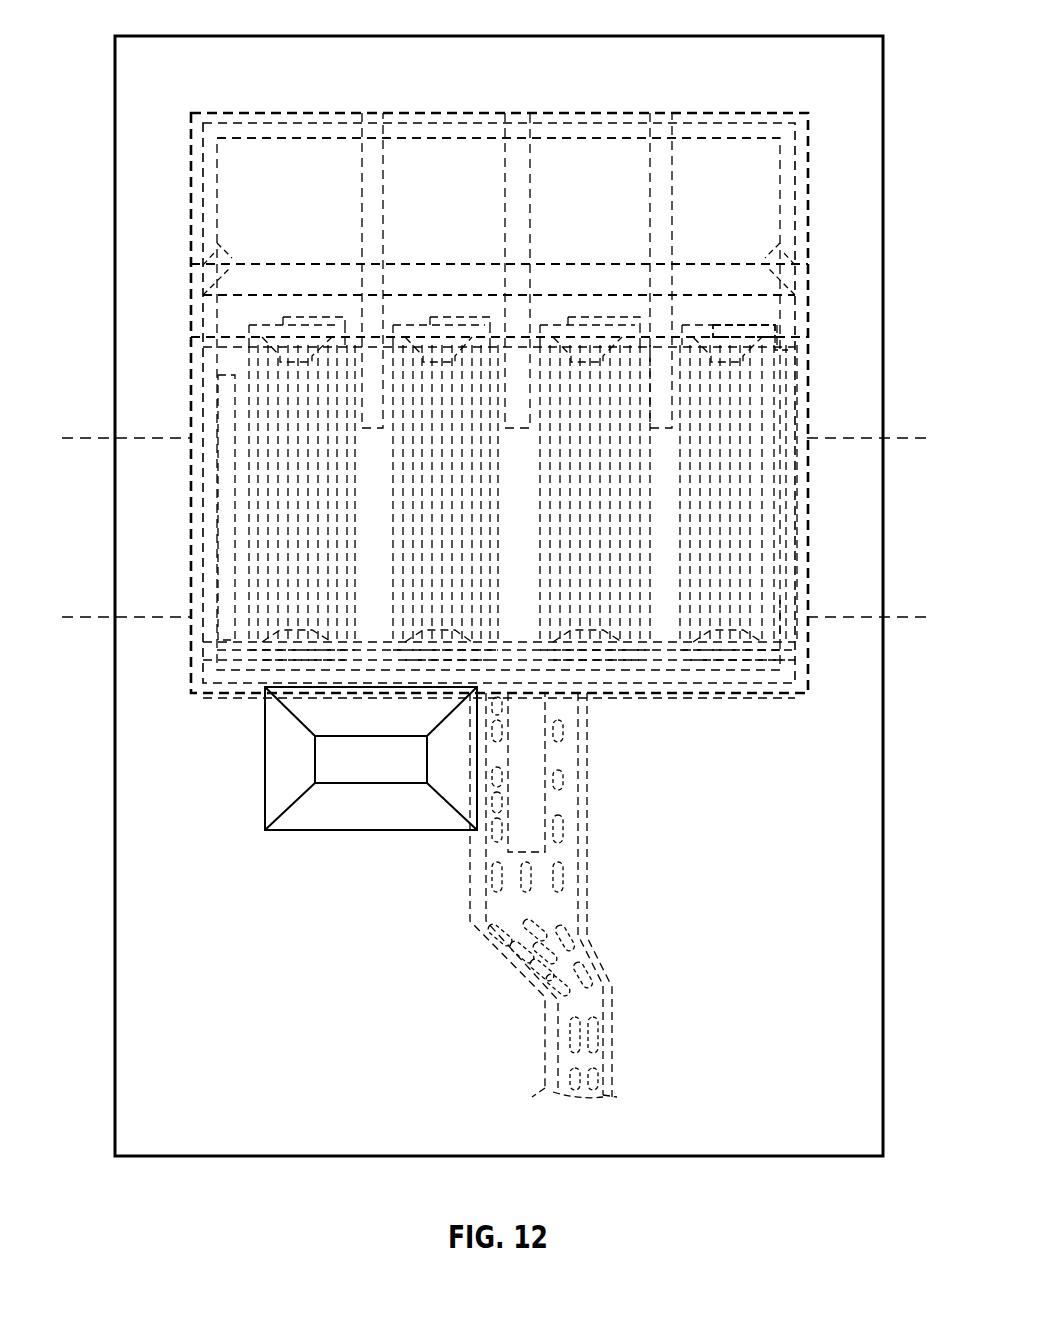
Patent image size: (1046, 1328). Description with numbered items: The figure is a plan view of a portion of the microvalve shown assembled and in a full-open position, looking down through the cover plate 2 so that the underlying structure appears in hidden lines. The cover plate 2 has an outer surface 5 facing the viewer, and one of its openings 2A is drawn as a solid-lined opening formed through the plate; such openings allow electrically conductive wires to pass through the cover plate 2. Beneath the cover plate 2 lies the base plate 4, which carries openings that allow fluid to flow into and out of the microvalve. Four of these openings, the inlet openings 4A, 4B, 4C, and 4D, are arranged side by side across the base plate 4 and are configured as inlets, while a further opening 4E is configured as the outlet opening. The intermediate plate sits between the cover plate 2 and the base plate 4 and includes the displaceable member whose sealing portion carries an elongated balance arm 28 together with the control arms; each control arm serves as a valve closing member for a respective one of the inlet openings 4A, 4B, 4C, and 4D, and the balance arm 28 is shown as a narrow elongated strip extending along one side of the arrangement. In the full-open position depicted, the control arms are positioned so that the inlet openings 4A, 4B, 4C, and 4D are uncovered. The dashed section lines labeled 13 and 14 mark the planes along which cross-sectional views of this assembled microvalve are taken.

The cover plate 2 is at (810, 36).
The opening 2A is at (332, 755).
The base plate 4 is at (203, 162).
The inlet opening 4A is at (686, 322).
The inlet opening 4B is at (560, 322).
The inlet opening 4C is at (428, 322).
The inlet opening 4D is at (272, 322).
The outlet opening 4E is at (287, 172).
The outer surface 5 is at (846, 85).
The section line 13- 13 is at (62, 438).
The section line 14- 14 is at (62, 617).
The balance arm 28 is at (233, 425).